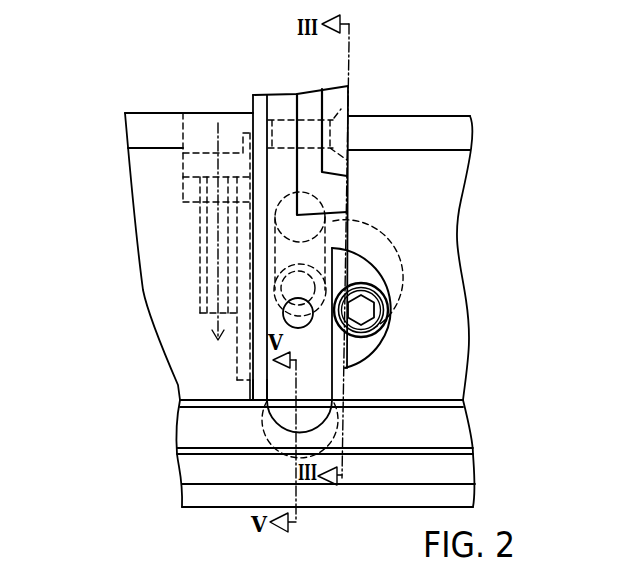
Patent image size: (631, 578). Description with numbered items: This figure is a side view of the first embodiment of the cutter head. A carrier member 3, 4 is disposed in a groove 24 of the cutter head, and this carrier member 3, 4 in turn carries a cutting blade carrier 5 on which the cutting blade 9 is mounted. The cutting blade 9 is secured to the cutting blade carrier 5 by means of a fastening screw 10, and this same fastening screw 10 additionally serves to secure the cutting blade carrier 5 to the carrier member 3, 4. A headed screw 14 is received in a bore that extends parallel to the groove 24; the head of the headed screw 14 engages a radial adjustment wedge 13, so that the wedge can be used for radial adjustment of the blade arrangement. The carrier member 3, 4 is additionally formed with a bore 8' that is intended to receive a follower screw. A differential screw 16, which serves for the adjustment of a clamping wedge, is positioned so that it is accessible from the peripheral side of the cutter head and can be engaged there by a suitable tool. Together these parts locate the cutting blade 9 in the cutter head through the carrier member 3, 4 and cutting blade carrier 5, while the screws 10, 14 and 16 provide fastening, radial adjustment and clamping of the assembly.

The carrier member 3 is at (249, 231).
The carrier member 4 is at (337, 103).
The cutting blade 9 is at (285, 107).
The fastening screw 10 is at (337, 140).
The headed screw 14 is at (207, 165).
The radial adjustment wedge 13 is at (258, 245).
The groove 24 is at (268, 373).
The cutting blade carrier 5 is at (330, 200).
The differential screw 16 is at (372, 298).
The bore 8' is at (431, 319).